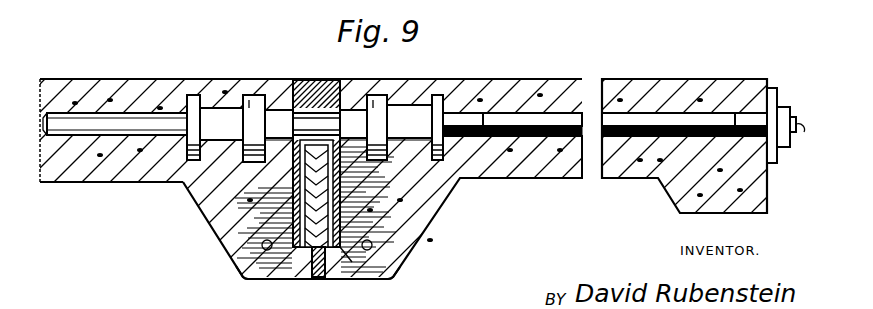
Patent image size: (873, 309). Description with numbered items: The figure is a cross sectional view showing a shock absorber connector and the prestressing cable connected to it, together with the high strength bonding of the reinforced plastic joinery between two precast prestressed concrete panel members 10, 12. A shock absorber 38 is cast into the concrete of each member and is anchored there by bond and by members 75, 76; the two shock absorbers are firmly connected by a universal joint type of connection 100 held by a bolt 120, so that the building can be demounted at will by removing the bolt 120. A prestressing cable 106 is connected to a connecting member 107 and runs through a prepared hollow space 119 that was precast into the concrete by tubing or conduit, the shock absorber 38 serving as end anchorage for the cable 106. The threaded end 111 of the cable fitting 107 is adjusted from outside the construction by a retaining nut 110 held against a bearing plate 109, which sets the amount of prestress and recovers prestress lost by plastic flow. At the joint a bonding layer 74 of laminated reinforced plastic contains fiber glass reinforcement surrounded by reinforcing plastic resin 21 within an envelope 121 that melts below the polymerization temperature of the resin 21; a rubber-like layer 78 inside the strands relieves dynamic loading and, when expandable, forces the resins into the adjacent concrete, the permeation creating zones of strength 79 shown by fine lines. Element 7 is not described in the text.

The lower slab corner 7 is at (403, 270).
The precast concrete member 10 is at (126, 182).
The precast concrete member 12 is at (426, 213).
The reinforcing plastic resin 21 is at (242, 277).
The shock absorber 38 is at (208, 160).
The bonding layer 74 is at (314, 277).
The anchoring member 75 is at (204, 62).
The anchoring member 76 is at (268, 62).
The rubber-like layer 78 is at (352, 263).
The zones of strength 79 is at (394, 246).
The universal joint type of connection 100 is at (345, 82).
The prestressing cable 106 is at (530, 137).
The connecting member 107 is at (456, 178).
The bearing plate 109 is at (775, 90).
The retaining nut 110 is at (782, 108).
The threaded end of cable fitting 111 is at (795, 126).
The hollow space 119 is at (652, 105).
The bolt 120 is at (306, 62).
The envelope 121 is at (312, 44).